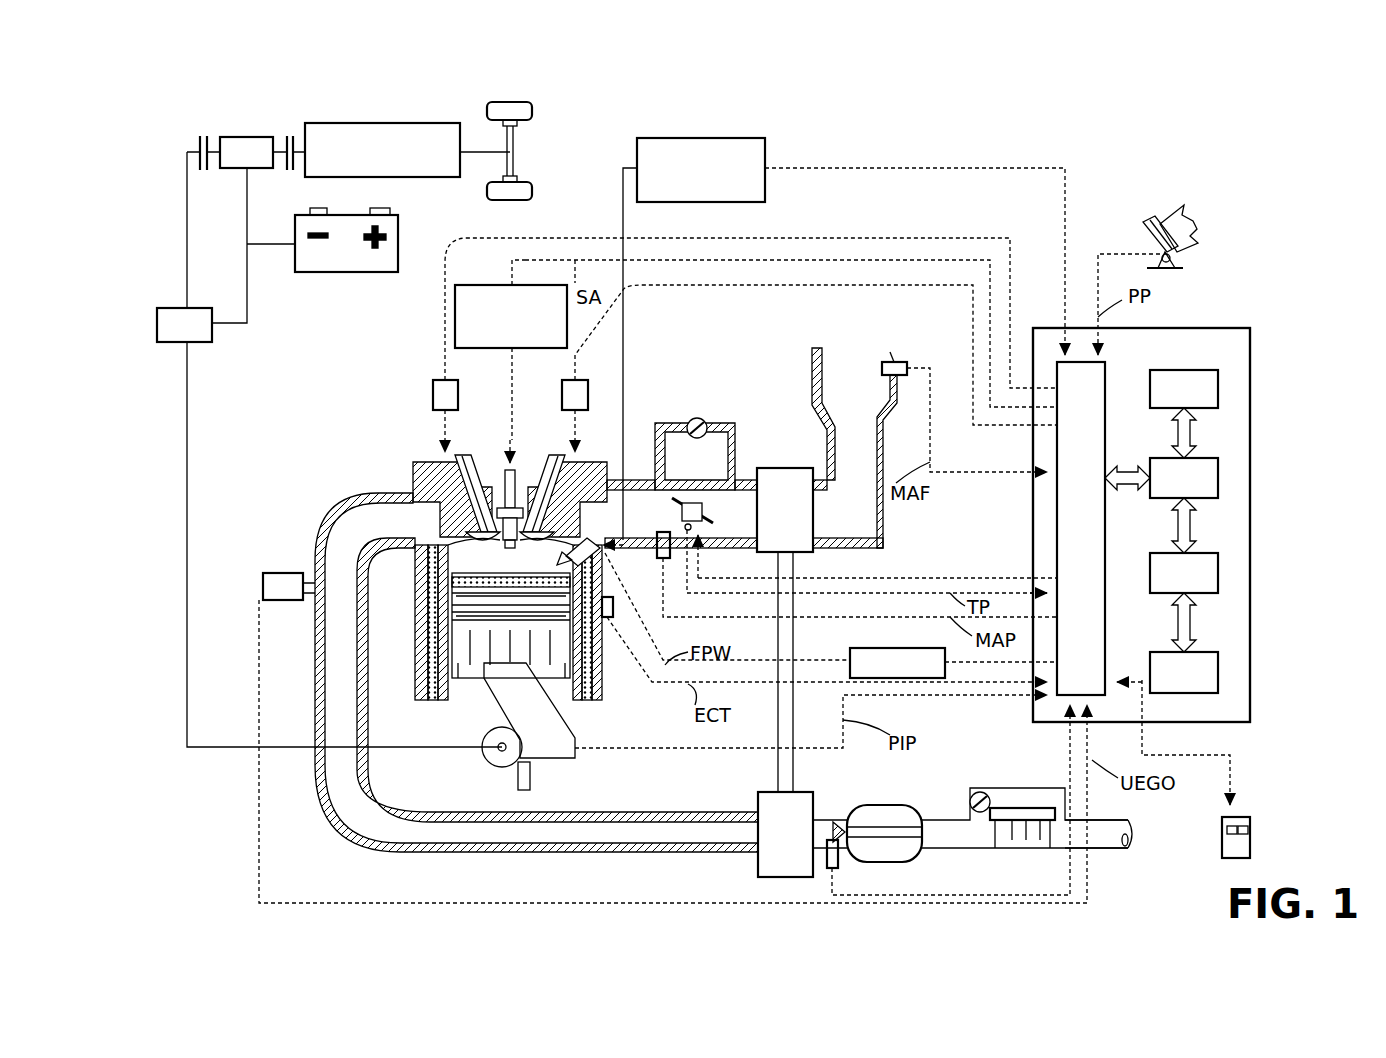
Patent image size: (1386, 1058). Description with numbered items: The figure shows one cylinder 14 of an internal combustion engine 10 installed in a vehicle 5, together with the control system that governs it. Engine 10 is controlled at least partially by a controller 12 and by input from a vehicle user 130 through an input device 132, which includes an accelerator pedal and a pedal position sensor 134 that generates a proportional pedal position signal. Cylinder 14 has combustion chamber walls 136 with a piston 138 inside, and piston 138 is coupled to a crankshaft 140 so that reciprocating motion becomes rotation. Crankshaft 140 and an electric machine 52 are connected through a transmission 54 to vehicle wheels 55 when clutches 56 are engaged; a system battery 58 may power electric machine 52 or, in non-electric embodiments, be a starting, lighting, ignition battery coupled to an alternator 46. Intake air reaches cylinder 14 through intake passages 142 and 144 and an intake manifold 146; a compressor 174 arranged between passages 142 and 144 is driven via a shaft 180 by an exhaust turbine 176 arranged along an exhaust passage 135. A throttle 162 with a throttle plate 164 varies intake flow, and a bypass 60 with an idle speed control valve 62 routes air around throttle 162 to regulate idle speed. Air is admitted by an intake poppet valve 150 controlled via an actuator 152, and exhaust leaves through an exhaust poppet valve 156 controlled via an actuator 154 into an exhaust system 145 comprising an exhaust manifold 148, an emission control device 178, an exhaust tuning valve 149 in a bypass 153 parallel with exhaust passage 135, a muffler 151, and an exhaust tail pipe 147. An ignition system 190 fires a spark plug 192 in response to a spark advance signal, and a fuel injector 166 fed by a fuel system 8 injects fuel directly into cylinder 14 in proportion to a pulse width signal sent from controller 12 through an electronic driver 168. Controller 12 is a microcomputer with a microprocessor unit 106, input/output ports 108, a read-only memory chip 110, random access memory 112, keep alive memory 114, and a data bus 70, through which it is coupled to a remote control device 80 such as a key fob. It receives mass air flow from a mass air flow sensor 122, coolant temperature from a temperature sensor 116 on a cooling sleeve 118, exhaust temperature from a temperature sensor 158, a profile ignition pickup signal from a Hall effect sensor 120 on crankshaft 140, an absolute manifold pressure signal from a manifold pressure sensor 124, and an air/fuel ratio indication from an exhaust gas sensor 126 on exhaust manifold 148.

The vehicle 5 is at (1293, 166).
The fuel system 8 is at (728, 140).
The internal combustion engine 10 is at (353, 420).
The controller 12 is at (1250, 332).
The cylinder 14 is at (415, 583).
The alternator 46 is at (157, 342).
The electric machine 52 is at (238, 137).
The transmission 54 is at (440, 177).
The vehicle wheel 55 is at (490, 107).
The clutches 56 is at (200, 140).
The system battery 58 is at (345, 272).
The bypass 60 is at (735, 435).
The ISC valve 62 is at (700, 418).
The data bus 70 is at (1081, 528).
The remote control device 80 is at (1222, 830).
The microprocessor unit 106 is at (1218, 470).
The input/output ports 108 is at (1105, 370).
The read-only memory chip 110 is at (1218, 380).
The random access memory 112 is at (1218, 570).
The keep alive memory 114 is at (1218, 670).
The temperature sensor 116 is at (615, 615).
The cooling sleeve 118 is at (600, 660).
The Hall effect sensor 120 is at (532, 777).
The mass air flow sensor 122 is at (900, 362).
The MAP sensor 124 is at (665, 560).
The exhaust gas sensor 126 is at (263, 576).
The vehicle user 130 is at (1198, 222).
The input device 132 is at (1148, 232).
The pedal position sensor 134 is at (1180, 258).
The exhaust passage 135 is at (675, 818).
The combustion chamber walls 136 is at (455, 695).
The piston 138 is at (497, 655).
The crankshaft 140 is at (502, 768).
The intake passage 142 is at (854, 448).
The intake passage 144 is at (799, 514).
The exhaust system 145 is at (290, 518).
The intake manifold 146 is at (681, 514).
The exhaust tail pipe 147 is at (1105, 850).
The exhaust manifold 148 is at (536, 672).
The exhaust tuning valve 149 is at (990, 794).
The intake poppet valve 150 is at (548, 490).
The muffler 151 is at (1020, 852).
The actuator 152 is at (562, 388).
The bypass 153 is at (1028, 800).
The actuator 154 is at (432, 382).
The exhaust poppet valve 156 is at (422, 492).
The temperature sensor 158 is at (828, 870).
The throttle 162 is at (698, 503).
The throttle plate 164 is at (675, 498).
The fuel injector 166 is at (580, 545).
The electronic driver 168 is at (850, 650).
The compressor 174 is at (785, 510).
The exhaust turbine 176 is at (785, 834).
The emission control device 178 is at (880, 806).
The shaft 180 is at (795, 757).
The ignition system 190 is at (465, 285).
The spark plug 192 is at (503, 475).